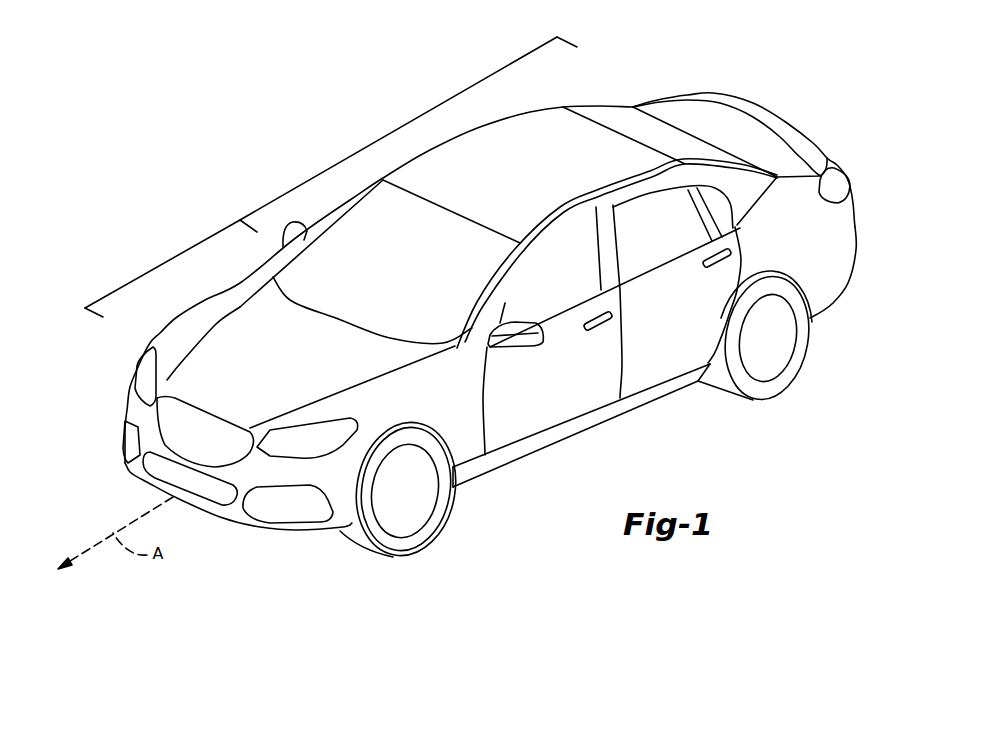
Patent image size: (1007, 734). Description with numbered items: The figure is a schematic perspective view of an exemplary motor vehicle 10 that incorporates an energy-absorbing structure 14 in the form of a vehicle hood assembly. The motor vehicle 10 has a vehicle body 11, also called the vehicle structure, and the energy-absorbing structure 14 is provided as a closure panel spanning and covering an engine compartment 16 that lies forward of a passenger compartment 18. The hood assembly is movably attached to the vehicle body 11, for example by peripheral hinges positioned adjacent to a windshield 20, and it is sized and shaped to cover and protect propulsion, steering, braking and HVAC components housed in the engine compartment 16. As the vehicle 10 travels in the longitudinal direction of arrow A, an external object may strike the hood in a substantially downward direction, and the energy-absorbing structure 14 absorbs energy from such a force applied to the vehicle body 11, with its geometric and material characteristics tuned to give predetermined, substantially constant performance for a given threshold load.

The motor vehicle 10 is at (416, 92).
The vehicle body 11 is at (798, 260).
The energy-absorbing structure 14 is at (262, 369).
The engine compartment 16 is at (184, 251).
The passenger compartment 18 is at (338, 164).
The windshield 20 is at (384, 269).